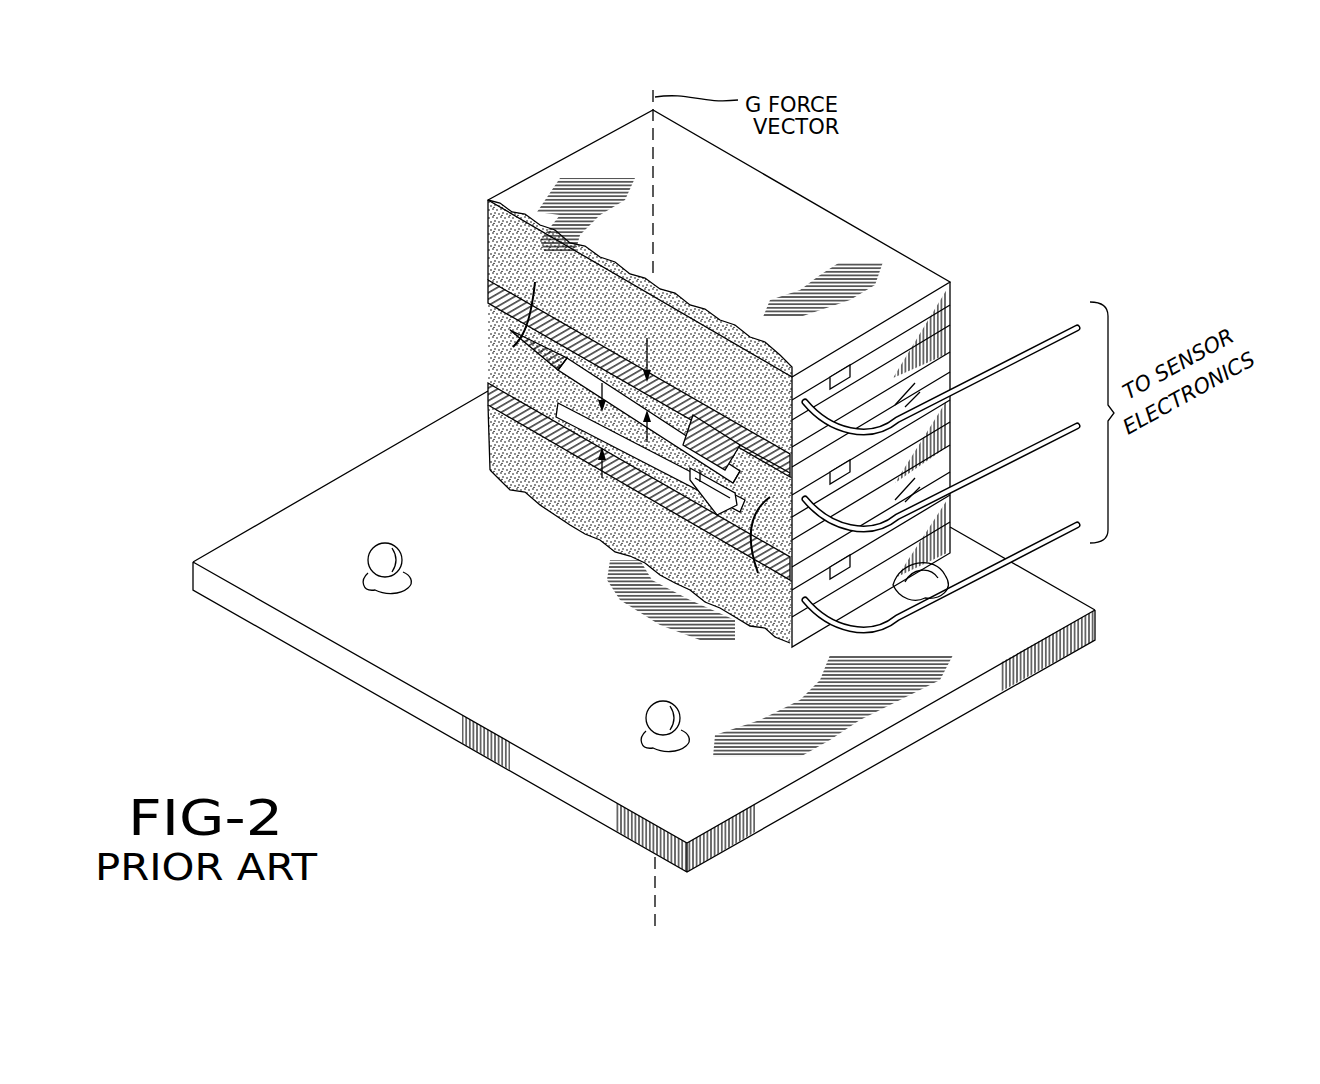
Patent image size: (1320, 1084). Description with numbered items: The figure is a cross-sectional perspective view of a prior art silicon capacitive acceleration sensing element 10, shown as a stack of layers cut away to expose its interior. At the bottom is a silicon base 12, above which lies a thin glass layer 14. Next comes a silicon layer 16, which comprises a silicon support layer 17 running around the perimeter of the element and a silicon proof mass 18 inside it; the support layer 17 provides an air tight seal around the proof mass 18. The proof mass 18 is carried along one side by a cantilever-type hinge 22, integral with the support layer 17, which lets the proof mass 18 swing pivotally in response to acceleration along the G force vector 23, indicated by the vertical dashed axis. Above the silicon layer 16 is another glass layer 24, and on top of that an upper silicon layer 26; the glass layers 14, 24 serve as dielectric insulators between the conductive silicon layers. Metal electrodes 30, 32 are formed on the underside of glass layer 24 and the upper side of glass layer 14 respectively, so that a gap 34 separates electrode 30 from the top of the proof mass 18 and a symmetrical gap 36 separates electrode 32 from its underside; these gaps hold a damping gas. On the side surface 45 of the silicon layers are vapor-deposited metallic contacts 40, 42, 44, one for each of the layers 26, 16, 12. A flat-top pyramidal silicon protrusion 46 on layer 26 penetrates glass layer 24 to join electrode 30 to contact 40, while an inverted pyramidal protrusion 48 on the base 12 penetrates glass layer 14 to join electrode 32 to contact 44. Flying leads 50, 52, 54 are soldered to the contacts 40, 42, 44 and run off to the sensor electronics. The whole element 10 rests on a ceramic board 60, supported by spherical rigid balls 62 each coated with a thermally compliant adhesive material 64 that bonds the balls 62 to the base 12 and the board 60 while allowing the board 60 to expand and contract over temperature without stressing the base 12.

The sensing element 10 is at (702, 378).
The base 12 is at (505, 463).
The glass layer 14 is at (490, 387).
The silicon layer 16 is at (601, 428).
The silicon support layer 17 is at (645, 428).
The proof mass 18 is at (670, 440).
The hinge 22 is at (723, 453).
The G force vector 23 is at (657, 248).
The glass layer 24 is at (493, 292).
The silicon layer 26 is at (503, 245).
The metal electrode 30 is at (587, 357).
The metal electrode 32 is at (567, 410).
The gap 34 is at (645, 377).
The gap 36 is at (602, 447).
The metallic contact 40 is at (828, 383).
The metallic contact 42 is at (828, 480).
The metallic contact 44 is at (828, 580).
The side surface 45 is at (912, 327).
The pyramidal protrusion 46 is at (715, 423).
The inverted pyramidal protrusion 48 is at (718, 510).
The flying lead 50 is at (1057, 340).
The flying lead 52 is at (1057, 437).
The flying lead 54 is at (1057, 535).
The ceramic board 60 is at (378, 683).
The spherical rigid ball 62 is at (400, 556).
The thermally compliant adhesive material 64 is at (385, 588).